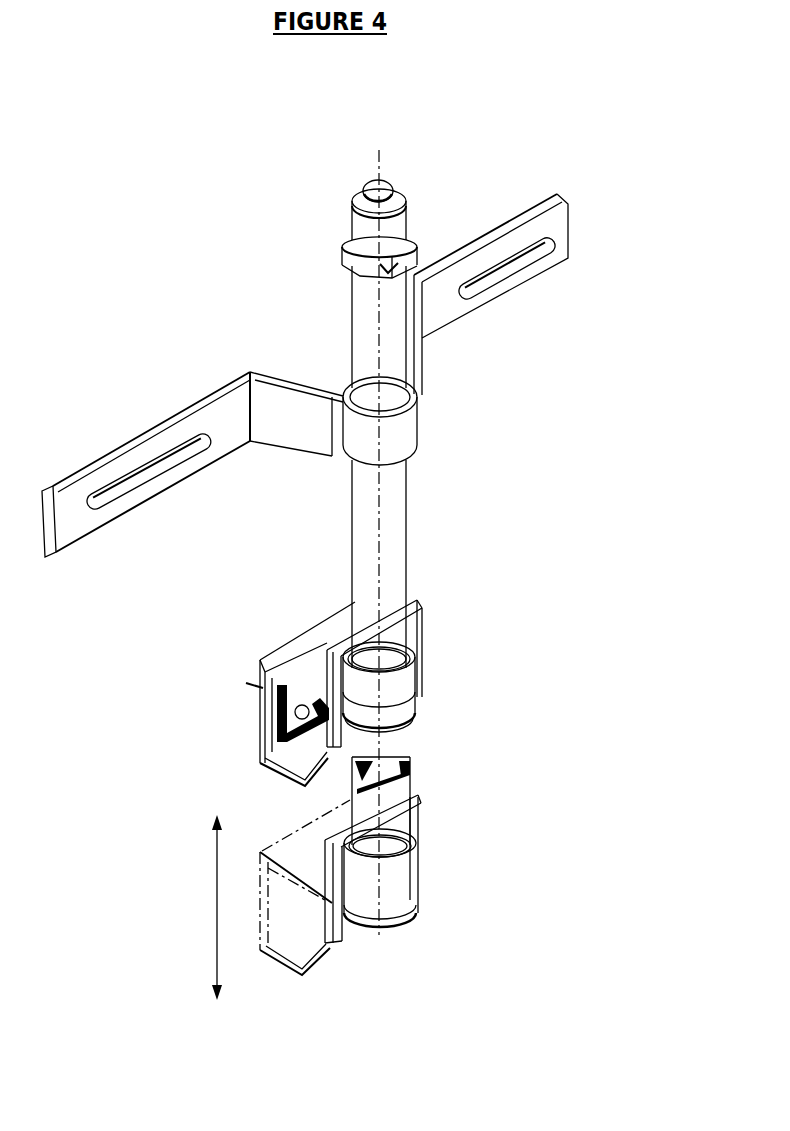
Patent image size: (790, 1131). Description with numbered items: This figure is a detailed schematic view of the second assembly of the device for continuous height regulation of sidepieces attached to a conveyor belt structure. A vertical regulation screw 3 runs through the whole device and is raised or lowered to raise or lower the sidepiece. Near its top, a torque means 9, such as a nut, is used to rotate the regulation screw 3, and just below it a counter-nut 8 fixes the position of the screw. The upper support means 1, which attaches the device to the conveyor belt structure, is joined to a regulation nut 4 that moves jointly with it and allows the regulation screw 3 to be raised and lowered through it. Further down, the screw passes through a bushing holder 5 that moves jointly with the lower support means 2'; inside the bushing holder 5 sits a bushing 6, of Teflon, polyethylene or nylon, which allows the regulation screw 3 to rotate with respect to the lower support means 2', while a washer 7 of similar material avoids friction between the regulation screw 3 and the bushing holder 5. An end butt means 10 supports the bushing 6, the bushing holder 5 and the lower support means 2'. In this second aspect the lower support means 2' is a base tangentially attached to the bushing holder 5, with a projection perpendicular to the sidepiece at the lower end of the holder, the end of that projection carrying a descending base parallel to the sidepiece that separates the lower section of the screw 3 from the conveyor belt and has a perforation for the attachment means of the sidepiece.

The upper support means 1 is at (528, 280).
The lower support means 2' is at (417, 647).
The regulation screw 3 is at (331, 517).
The regulation nut 4 is at (326, 461).
The bushing holder 5 is at (285, 686).
The bushing 6 is at (420, 655).
The washer 7 is at (419, 700).
The counter-nut 8 is at (421, 221).
The torque means 9 is at (323, 168).
The end butt means 10 is at (427, 753).